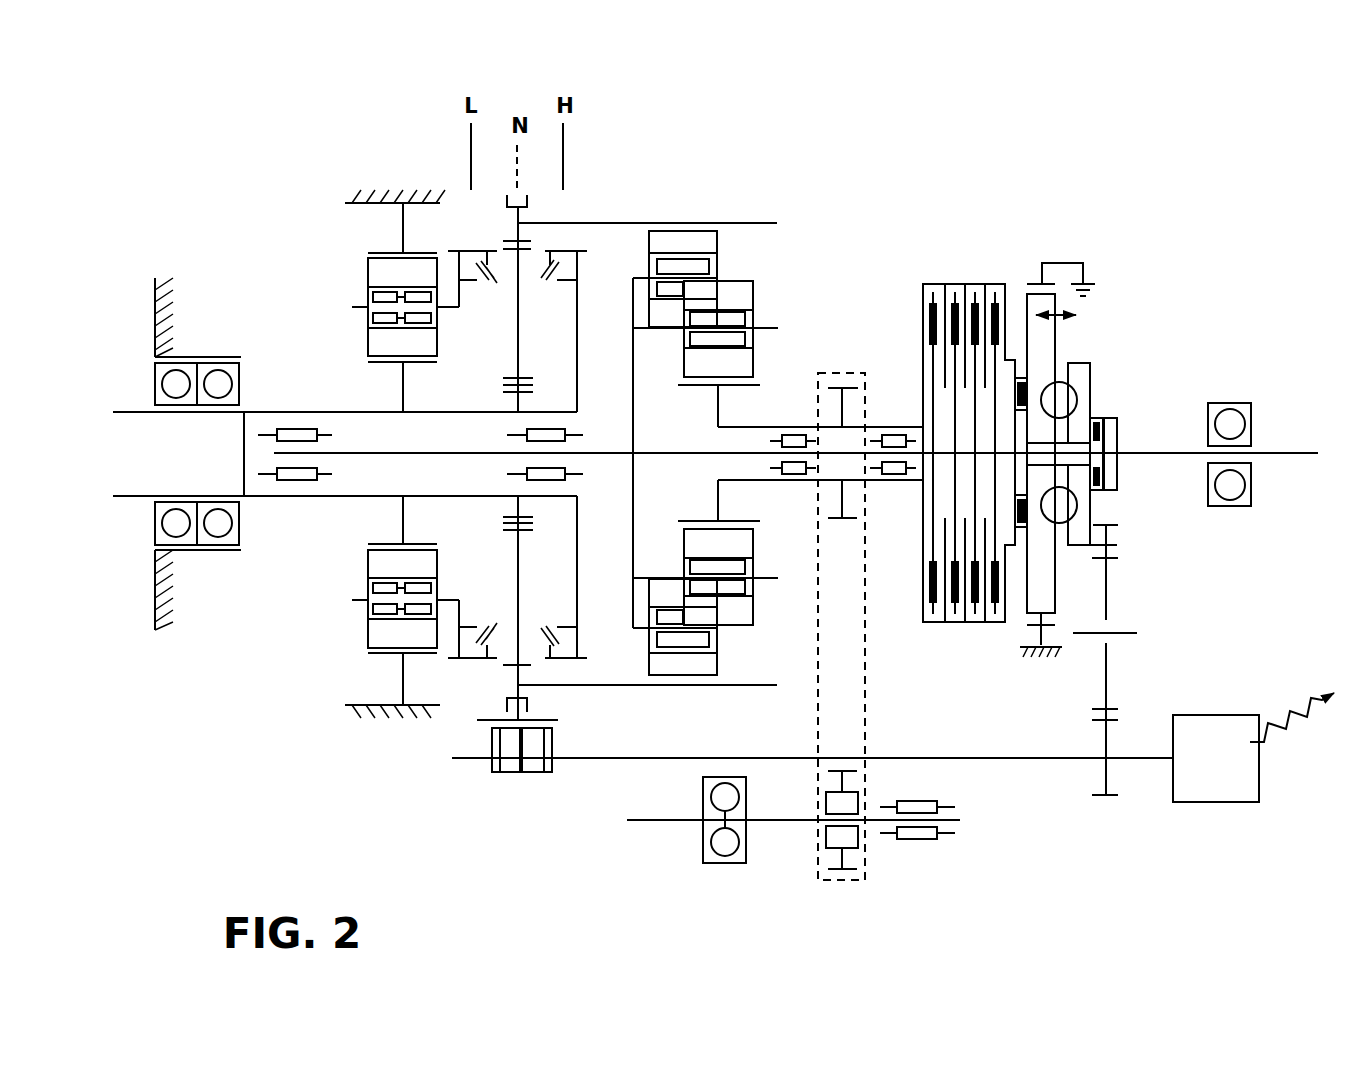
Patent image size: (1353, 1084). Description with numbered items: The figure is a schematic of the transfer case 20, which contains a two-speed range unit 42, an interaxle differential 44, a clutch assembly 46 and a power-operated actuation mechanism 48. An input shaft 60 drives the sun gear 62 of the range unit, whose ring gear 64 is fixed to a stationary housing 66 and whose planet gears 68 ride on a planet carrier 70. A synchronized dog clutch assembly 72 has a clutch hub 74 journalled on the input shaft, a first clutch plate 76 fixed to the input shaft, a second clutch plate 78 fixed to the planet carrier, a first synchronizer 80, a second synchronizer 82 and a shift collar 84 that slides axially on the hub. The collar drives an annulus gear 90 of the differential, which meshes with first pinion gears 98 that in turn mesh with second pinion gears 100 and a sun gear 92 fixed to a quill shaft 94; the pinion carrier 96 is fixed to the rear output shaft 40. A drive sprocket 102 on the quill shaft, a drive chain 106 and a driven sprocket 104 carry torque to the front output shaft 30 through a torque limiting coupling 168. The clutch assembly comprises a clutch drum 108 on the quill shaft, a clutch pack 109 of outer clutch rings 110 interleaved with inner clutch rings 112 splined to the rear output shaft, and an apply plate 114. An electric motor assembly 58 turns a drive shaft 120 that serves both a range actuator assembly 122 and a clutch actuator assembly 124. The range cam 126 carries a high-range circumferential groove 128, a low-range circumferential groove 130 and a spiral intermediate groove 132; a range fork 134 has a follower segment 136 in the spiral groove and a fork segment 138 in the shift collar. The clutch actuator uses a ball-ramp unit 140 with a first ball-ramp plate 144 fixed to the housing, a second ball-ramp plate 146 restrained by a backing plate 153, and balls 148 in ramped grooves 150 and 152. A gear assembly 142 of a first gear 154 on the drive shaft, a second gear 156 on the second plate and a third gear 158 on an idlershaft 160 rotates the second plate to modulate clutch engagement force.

The transfer case 20 is at (992, 97).
The front output shaft 30 is at (630, 822).
The rear output shaft 40 is at (1297, 453).
The two-speed range unit 42 is at (572, 194).
The interaxle differential 44 is at (777, 260).
The clutch assembly 46 is at (990, 264).
The power-operated actuation mechanism 48 is at (1042, 828).
The electric motor assembly 58 is at (1217, 725).
The input shaft 60 is at (290, 497).
The sun gear 62 is at (403, 386).
The ring gear 64 is at (381, 257).
The stationary housing 66 is at (347, 202).
The planet gears 68 is at (367, 646).
The planet carrier 70 is at (447, 600).
The synchronized dog clutch assembly 72 is at (492, 316).
The clutch hub 74 is at (518, 565).
The first clutch plate 76 is at (577, 360).
The second clutch plate 78 is at (460, 618).
The first synchronizer 80 is at (546, 262).
The second synchronizer 82 is at (490, 650).
The shift collar 84 is at (516, 212).
The annulus gear 90 is at (612, 225).
The sun gear 92 is at (720, 510).
The quill shaft 94 is at (735, 428).
The pinion carrier 96 is at (633, 410).
The first pinion gears 98 is at (712, 232).
The second pinion gears 100 is at (745, 290).
The drive sprocket 102 is at (836, 387).
The driven sprocket 104 is at (848, 870).
The drive chain 106 is at (866, 706).
The clutch drum 108 is at (927, 297).
The clutch pack 109 is at (944, 410).
The outer clutch rings 110 is at (966, 300).
The inner clutch rings 112 is at (953, 478).
The apply plate 114 is at (1003, 528).
The drive shaft 120 is at (985, 752).
The range actuator assembly 122 is at (502, 791).
The clutch actuator assembly 124 is at (1172, 689).
The range cam 126 is at (500, 768).
The high-range circumferential groove 128 is at (550, 742).
The low-range circumferential groove 130 is at (497, 745).
The spiral intermediate groove 132 is at (540, 760).
The range fork 134 is at (543, 720).
The follower segment 136 is at (506, 730).
The fork segment 138 is at (515, 718).
The ball-ramp unit 140 is at (1040, 342).
The gear assembly 142 is at (1119, 667).
The first ball-ramp plate 144 is at (1096, 349).
The second ball-ramp plate 146 is at (1080, 418).
The balls 148 is at (1062, 400).
The ramped groove 150 is at (1057, 520).
The ramped groove 152 is at (1068, 507).
The backing plate 153 is at (1112, 428).
The first gear 154 is at (1110, 798).
The second gear 156 is at (1100, 526).
The third gear 158 is at (1107, 593).
The idlershaft 160 is at (1087, 635).
The torque limiting coupling 168 is at (824, 835).